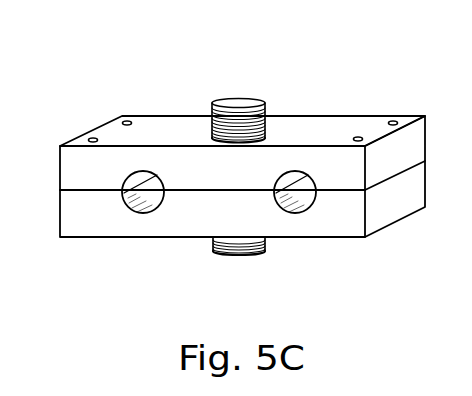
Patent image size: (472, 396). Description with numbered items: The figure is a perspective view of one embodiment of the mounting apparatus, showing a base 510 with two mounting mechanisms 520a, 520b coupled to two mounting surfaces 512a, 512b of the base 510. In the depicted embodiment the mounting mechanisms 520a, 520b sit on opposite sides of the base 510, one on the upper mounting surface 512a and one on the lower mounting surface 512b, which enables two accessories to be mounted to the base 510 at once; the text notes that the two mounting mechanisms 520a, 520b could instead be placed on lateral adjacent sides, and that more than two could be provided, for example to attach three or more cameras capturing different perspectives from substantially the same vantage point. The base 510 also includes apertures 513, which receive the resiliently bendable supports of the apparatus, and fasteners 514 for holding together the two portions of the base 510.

The base 510 is at (239, 190).
The first mounting surface 512a is at (160, 127).
The second mounting surface 512b is at (103, 242).
The apertures 513 is at (297, 192).
The fasteners 514 is at (93, 138).
The first mounting mechanism 520a is at (240, 102).
The second mounting mechanism 520b is at (234, 256).